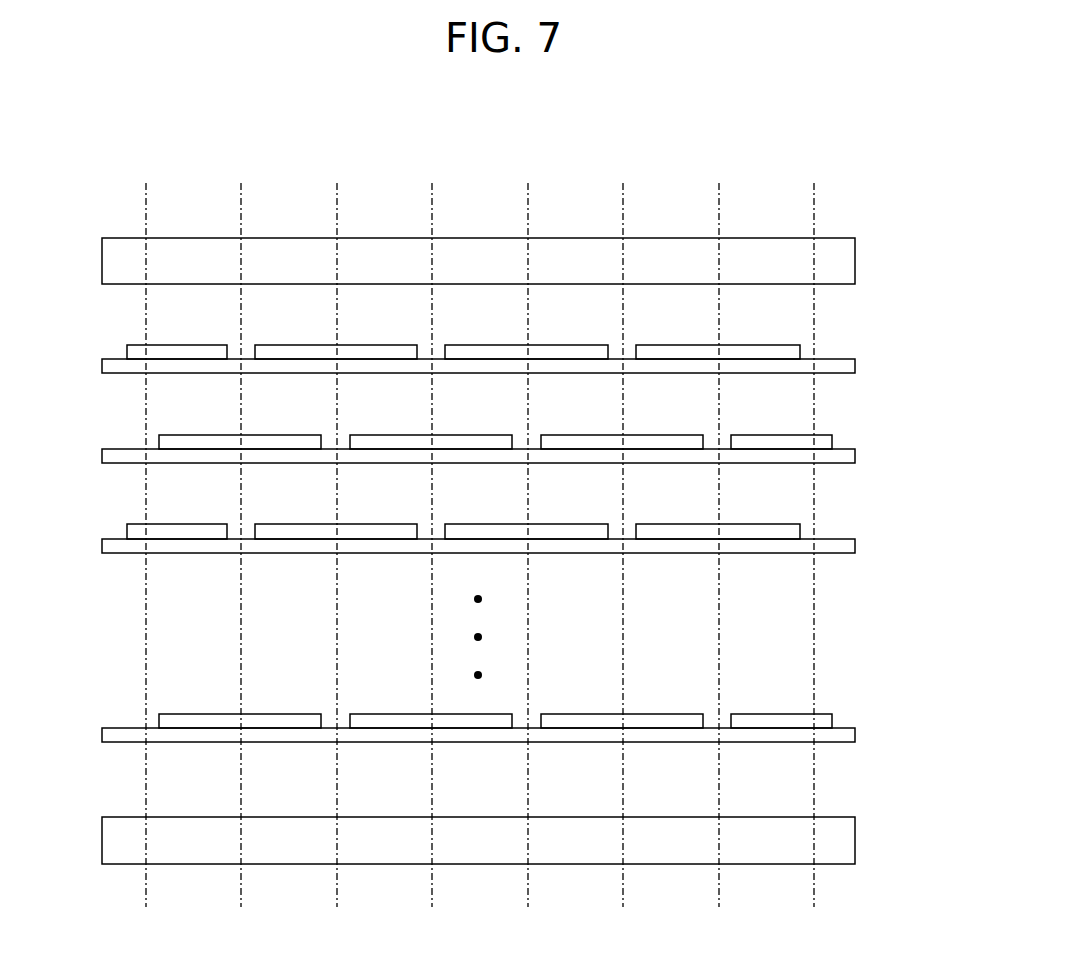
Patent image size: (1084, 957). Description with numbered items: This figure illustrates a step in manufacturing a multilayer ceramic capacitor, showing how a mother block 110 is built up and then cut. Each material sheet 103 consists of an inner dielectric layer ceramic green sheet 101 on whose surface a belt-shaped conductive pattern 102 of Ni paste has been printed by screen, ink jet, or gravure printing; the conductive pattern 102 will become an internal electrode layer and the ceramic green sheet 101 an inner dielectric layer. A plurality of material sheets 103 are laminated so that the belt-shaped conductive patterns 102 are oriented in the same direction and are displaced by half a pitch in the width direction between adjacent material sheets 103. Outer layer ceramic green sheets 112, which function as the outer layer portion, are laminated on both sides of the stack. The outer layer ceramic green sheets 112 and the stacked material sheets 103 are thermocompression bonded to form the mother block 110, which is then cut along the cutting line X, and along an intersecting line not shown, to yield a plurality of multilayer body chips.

The mother block 110 is at (671, 101).
The outer layer ceramic green sheet 112 is at (845, 228).
The material sheet 103 is at (503, 522).
The inner dielectric layer ceramic green sheet 101 is at (838, 365).
The conductive pattern 102 is at (176, 353).